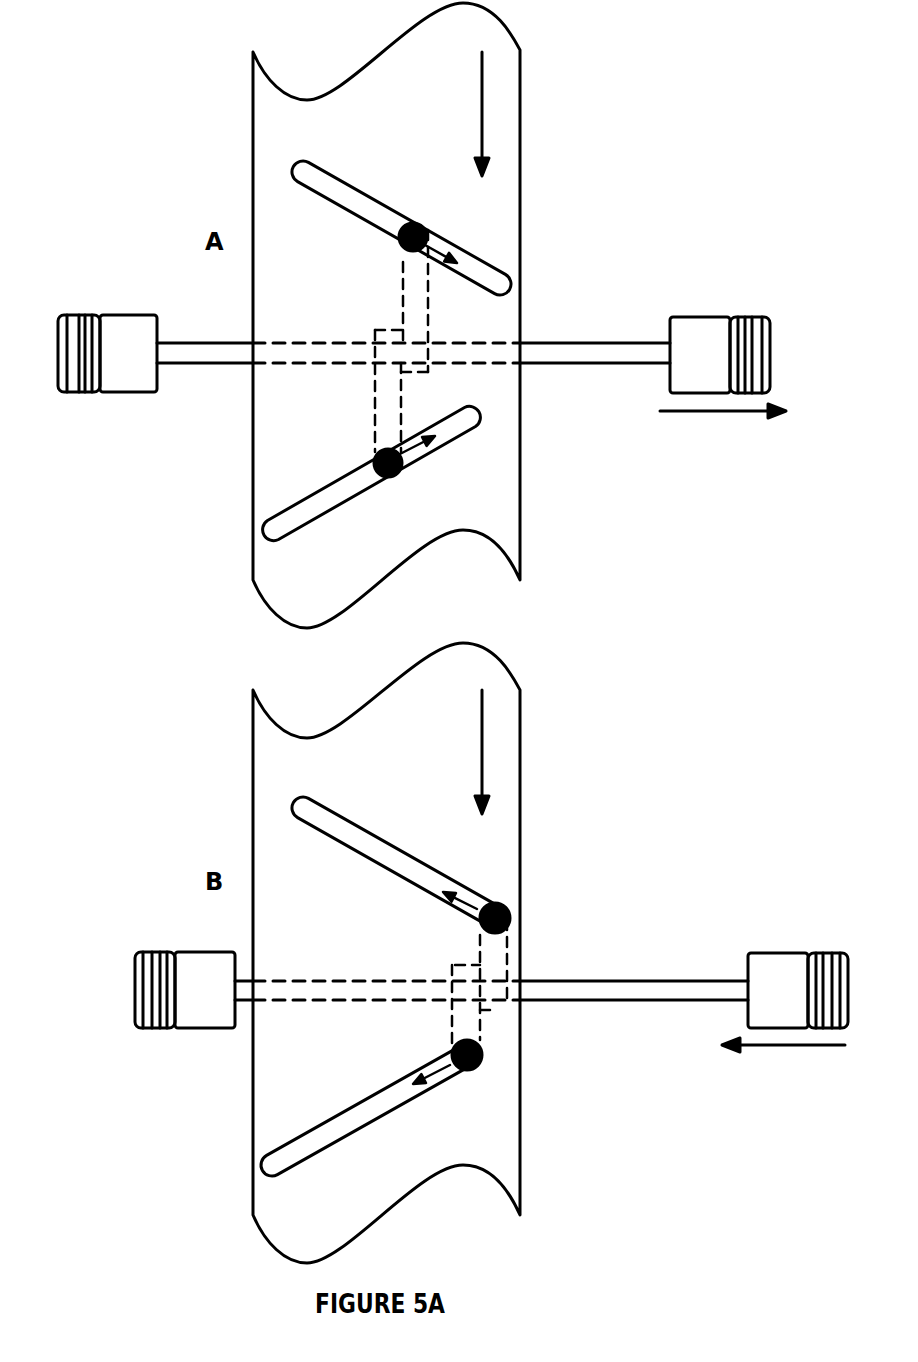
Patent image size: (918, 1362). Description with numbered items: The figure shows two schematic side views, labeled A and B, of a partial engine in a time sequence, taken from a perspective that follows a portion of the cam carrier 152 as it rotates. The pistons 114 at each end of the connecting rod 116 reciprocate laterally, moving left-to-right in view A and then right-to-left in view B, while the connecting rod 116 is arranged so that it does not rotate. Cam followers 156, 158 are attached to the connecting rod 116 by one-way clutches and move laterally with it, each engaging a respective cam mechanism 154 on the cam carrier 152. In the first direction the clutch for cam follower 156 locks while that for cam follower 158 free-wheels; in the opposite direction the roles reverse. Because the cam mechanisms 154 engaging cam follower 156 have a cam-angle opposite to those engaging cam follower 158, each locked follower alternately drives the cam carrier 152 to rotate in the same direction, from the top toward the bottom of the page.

The pistons 114 is at (453, 670).
The connecting rod 116 is at (452, 627).
The cam carrier 152 is at (386, 633).
The cam mechanisms 154 is at (386, 662).
The cam follower 156 is at (400, 646).
The cam follower 158 is at (411, 635).